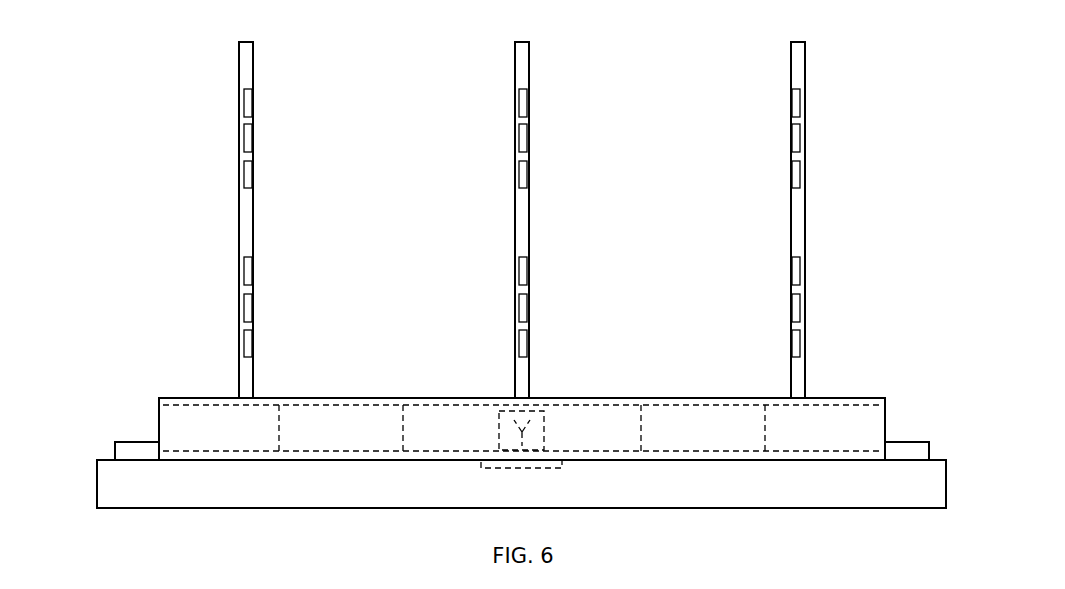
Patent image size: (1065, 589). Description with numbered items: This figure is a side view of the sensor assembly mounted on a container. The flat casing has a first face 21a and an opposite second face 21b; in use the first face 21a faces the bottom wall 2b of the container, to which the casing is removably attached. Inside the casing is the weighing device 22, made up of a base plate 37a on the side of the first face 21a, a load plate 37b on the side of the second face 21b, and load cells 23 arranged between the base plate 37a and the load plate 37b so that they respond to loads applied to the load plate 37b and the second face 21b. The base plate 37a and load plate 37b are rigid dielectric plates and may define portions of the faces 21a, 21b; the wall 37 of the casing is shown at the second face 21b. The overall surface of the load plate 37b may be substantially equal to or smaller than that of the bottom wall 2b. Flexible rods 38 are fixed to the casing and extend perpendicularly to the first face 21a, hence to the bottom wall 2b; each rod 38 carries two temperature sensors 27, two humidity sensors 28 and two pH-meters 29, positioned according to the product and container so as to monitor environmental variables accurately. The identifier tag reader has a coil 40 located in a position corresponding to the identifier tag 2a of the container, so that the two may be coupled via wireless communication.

The identifier tag 2a is at (533, 468).
The bottom wall 2b is at (96, 485).
The first face 21a is at (215, 463).
The second face 21b is at (212, 396).
The weighing device 22 is at (157, 423).
The load cells 23 is at (357, 422).
The temperature sensors 27 is at (253, 105).
The humidity sensors 28 is at (253, 137).
The pH-meters 29 is at (253, 178).
The top wall 37 is at (407, 398).
The base plate 37a is at (838, 405).
The load plate 37b is at (817, 457).
The flexible rods 38 is at (238, 212).
The coil 40 is at (545, 422).